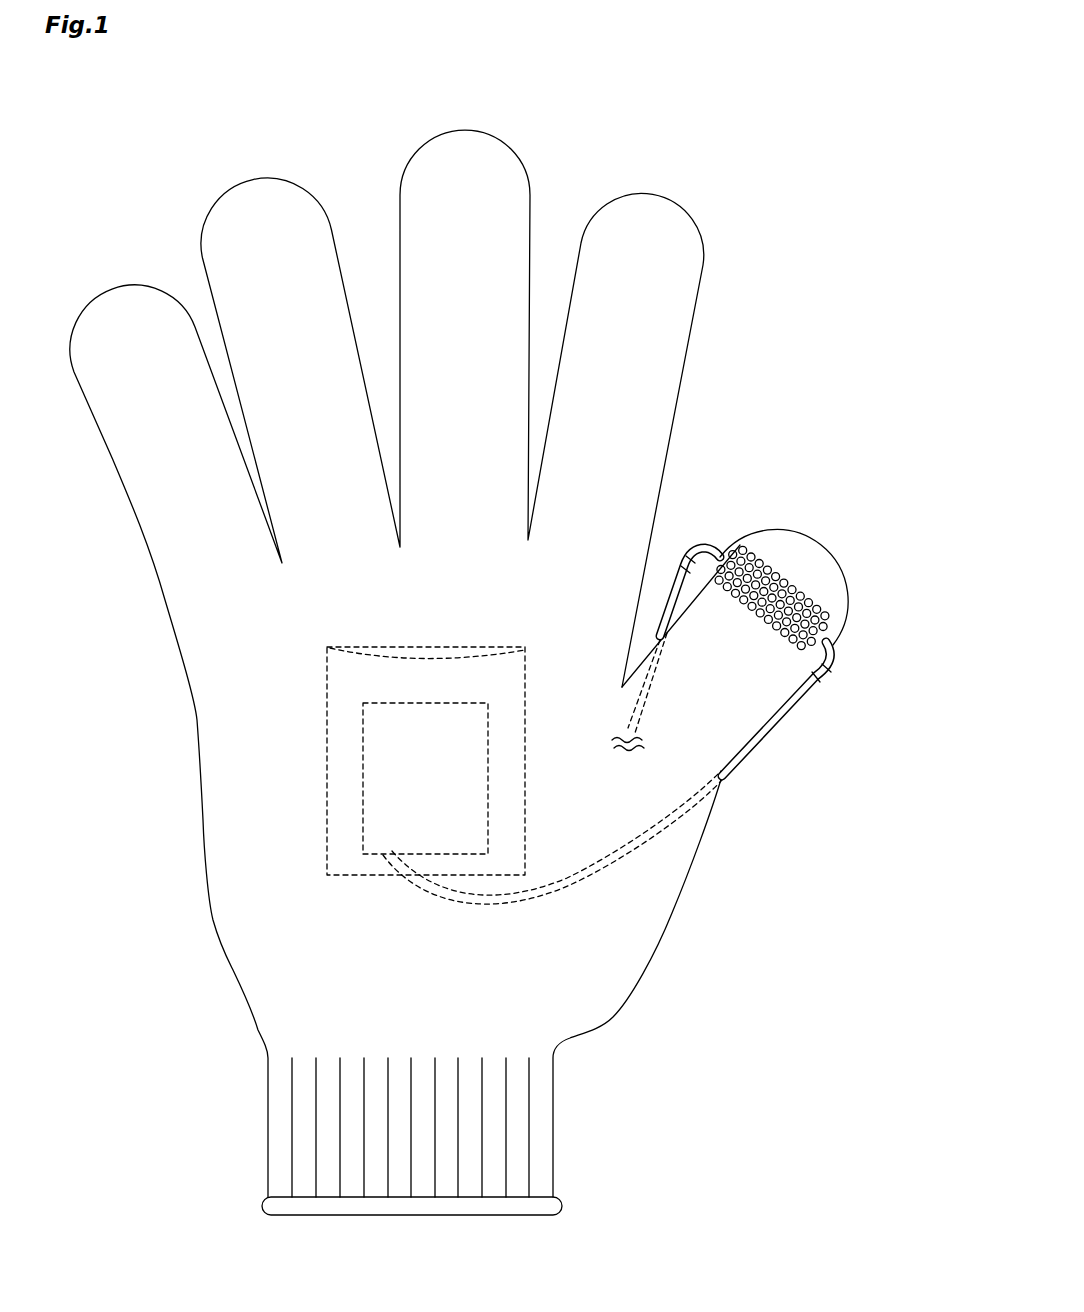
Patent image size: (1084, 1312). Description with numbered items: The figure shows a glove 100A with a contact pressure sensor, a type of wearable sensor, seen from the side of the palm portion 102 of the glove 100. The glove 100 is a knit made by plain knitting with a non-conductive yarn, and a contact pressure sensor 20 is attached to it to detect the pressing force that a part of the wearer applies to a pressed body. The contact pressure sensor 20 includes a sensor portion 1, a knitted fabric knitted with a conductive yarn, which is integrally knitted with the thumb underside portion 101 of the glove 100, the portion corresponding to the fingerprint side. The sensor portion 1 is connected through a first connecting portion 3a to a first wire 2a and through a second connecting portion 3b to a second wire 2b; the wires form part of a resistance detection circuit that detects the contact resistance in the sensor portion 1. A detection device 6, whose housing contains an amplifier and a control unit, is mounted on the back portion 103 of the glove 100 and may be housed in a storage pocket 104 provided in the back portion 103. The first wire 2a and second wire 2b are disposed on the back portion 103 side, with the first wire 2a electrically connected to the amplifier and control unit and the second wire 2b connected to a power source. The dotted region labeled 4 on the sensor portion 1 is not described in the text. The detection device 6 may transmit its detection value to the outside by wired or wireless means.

The glove with a contact pressure sensor 100A is at (793, 150).
The glove 100 is at (608, 1161).
The thumb underside portion 101 is at (757, 622).
The palm portion 102 is at (300, 920).
The back portion 103 is at (312, 778).
The storage pocket 104 is at (325, 745).
The contact pressure sensor 20 is at (858, 612).
The sensor portion 1 is at (787, 567).
The sensor array 4 is at (812, 598).
The first wire 2a is at (790, 717).
The second wire 2b is at (673, 583).
The first connecting portion 3a is at (836, 652).
The second connecting portion 3b is at (716, 556).
The detection device 6 is at (488, 818).